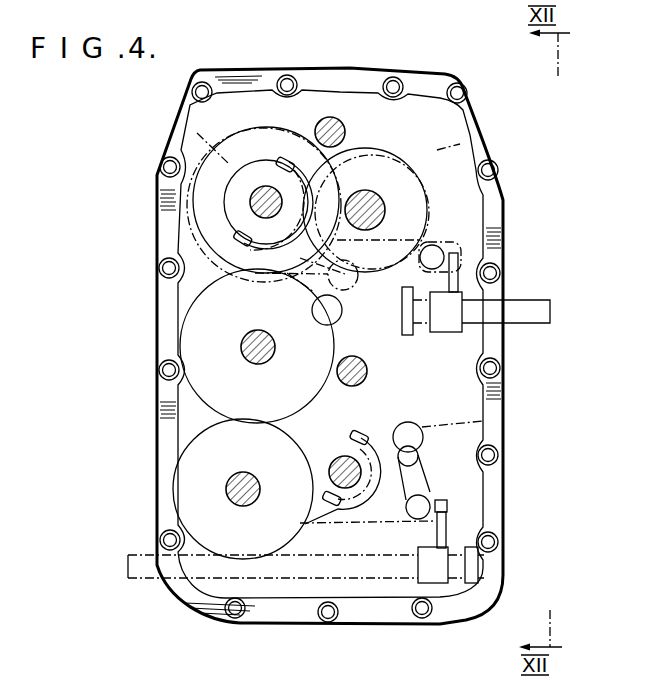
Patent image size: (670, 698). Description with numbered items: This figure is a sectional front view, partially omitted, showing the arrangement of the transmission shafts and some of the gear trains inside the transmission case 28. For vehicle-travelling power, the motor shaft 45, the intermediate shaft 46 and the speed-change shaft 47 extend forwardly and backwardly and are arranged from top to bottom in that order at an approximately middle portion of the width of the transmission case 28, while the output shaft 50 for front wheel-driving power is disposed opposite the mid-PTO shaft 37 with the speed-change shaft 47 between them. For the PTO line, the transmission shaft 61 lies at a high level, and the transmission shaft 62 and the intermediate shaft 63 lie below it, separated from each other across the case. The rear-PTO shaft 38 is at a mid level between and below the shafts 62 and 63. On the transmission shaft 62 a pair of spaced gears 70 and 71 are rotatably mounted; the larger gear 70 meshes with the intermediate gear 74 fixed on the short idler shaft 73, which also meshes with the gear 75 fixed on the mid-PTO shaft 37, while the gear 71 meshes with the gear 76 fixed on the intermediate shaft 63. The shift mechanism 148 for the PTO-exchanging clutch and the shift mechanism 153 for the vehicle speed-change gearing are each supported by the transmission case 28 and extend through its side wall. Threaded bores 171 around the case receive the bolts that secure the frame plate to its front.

The transmission case 28 is at (425, 80).
The threaded bores 171 is at (289, 79).
The gear 70 is at (268, 128).
The gear 71 is at (207, 140).
The transmission shaft 62 is at (262, 205).
The transmission shaft 61 is at (340, 115).
The intermediate shaft 63 is at (370, 218).
The gear 76 is at (450, 145).
The shift mechanism 148 is at (467, 286).
The motor shaft 45 is at (352, 290).
The rear-PTO shaft 38 is at (320, 322).
The intermediate shaft 46 is at (362, 372).
The intermediate gear 74 is at (190, 302).
The idler shaft 73 is at (252, 350).
The gear 75 is at (178, 455).
The mid-PTO shaft 37 is at (240, 492).
The speed-change shaft 47 is at (300, 510).
The output shaft 50 is at (425, 428).
The shift mechanism 153 is at (457, 496).